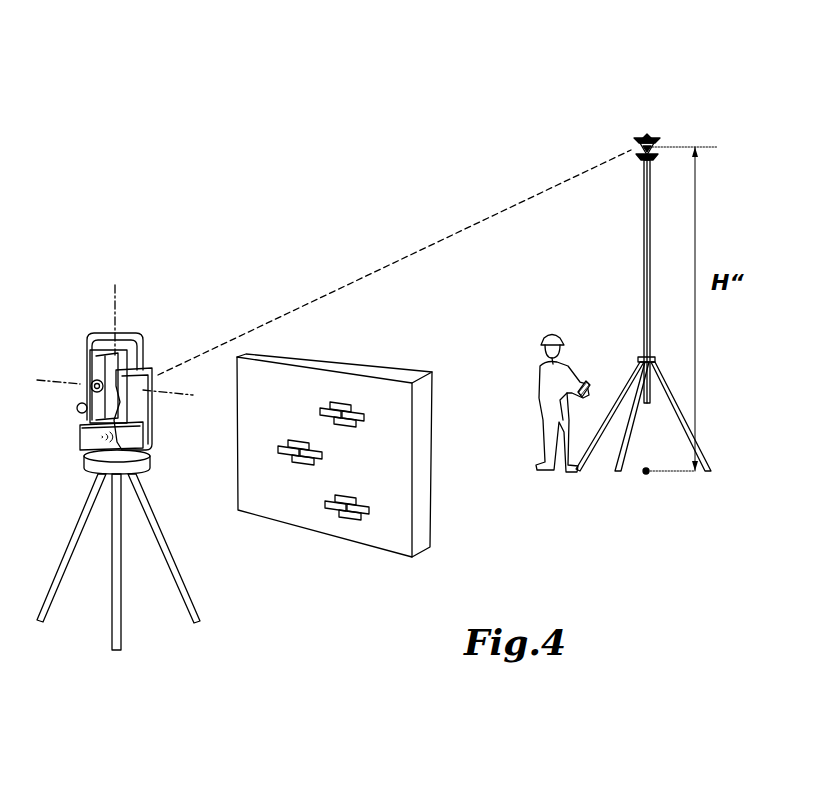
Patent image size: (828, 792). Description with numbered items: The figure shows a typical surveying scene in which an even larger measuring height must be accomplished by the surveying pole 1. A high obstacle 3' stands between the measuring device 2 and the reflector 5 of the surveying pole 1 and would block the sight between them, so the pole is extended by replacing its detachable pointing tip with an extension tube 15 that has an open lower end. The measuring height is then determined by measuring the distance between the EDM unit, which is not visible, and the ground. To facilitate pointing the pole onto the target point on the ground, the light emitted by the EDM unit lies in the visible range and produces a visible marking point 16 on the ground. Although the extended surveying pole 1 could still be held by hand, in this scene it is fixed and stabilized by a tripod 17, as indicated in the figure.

The surveying pole 1 is at (650, 260).
The measuring device 2 is at (162, 336).
The obstacle 3' is at (334, 438).
The reflector 5 is at (630, 147).
The extension tube 15 is at (650, 322).
The visible marking point 16 is at (652, 481).
The tripod 17 is at (682, 422).